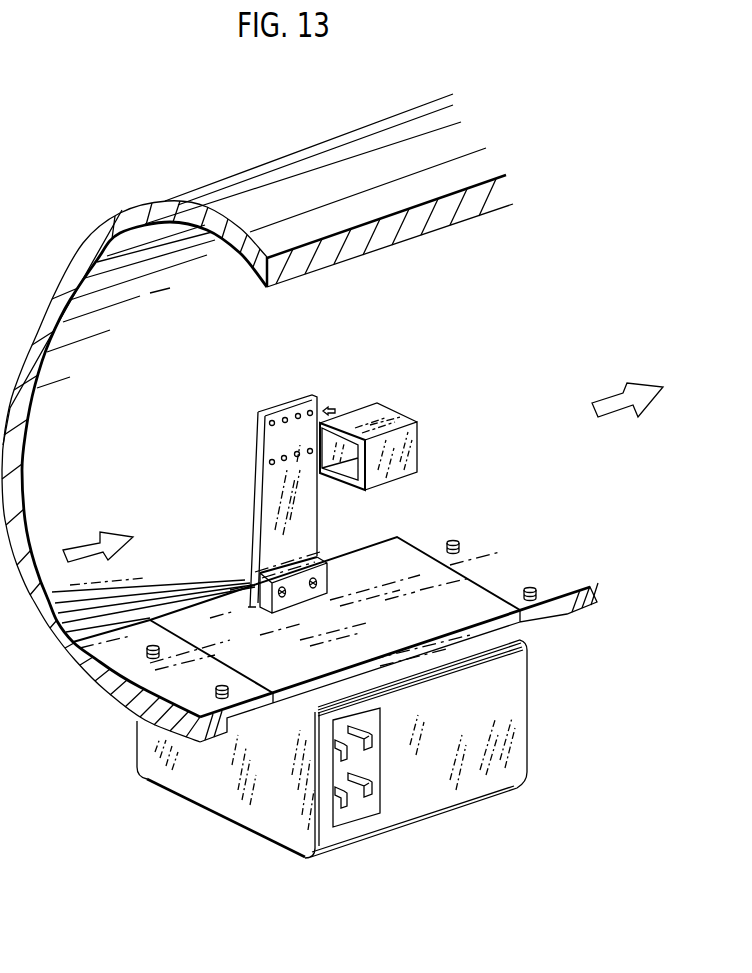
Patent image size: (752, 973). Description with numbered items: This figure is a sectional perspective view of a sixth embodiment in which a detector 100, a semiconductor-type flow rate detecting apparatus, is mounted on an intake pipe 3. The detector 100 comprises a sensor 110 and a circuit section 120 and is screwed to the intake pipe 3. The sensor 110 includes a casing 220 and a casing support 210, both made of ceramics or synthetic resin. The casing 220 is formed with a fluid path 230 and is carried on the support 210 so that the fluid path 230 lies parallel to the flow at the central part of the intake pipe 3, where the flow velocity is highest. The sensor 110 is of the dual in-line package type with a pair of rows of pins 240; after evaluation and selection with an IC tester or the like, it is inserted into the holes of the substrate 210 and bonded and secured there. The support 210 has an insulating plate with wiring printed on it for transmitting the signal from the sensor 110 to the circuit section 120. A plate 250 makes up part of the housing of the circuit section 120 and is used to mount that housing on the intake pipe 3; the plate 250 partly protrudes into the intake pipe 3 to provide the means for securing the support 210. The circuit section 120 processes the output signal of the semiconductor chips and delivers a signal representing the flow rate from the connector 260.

The intake pipe 3 is at (437, 218).
The detector 100 is at (528, 757).
The sensor 110 is at (405, 424).
The circuit section 120 is at (513, 690).
The casing support 210 is at (300, 520).
The casing 220 is at (382, 408).
The fluid path 230 is at (330, 447).
The pins 240 is at (293, 473).
The plate 250 is at (460, 578).
The connector 260 is at (358, 793).